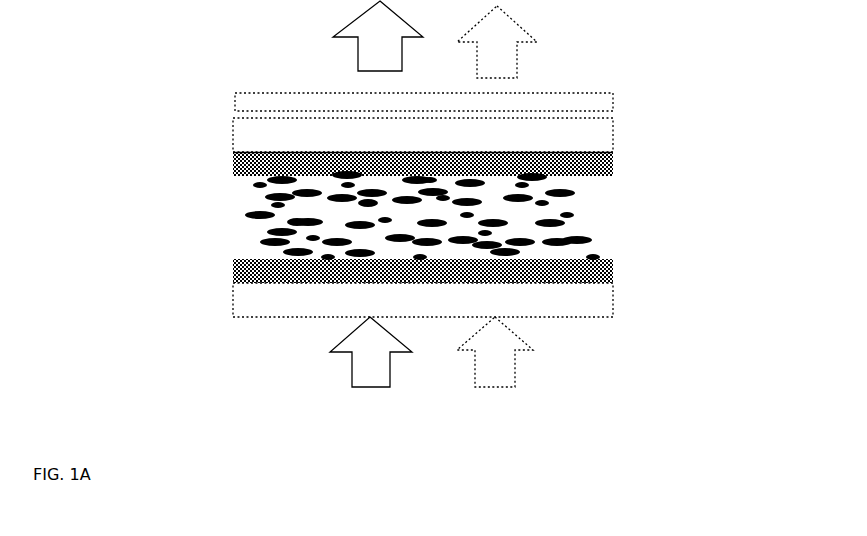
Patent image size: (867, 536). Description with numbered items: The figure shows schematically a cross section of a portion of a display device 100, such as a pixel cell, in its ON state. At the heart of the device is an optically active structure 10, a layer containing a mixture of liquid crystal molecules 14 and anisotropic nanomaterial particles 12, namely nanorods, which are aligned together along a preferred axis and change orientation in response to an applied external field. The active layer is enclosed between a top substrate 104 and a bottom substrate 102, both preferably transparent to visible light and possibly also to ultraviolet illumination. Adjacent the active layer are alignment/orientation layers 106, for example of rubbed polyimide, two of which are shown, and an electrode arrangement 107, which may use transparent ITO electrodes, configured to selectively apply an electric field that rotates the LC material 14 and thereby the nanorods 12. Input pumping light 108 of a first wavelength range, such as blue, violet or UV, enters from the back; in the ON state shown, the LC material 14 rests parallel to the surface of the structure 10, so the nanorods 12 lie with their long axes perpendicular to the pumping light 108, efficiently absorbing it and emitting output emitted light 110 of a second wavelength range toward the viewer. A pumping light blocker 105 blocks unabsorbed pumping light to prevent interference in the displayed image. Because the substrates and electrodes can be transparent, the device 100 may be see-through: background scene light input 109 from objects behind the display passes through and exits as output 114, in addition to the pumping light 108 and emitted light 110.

The display device 100 is at (170, 72).
The optically active structure 10 is at (238, 193).
The anisotropic nanomaterial particles 12 is at (575, 215).
The liquid crystal molecules 14 is at (265, 232).
The bottom substrate 102 is at (612, 147).
The top substrate 104 is at (613, 290).
The pumping light blocker 105 is at (613, 103).
The alignment/orientation layer 106 is at (232, 172).
The electrode arrangement 107 is at (232, 155).
The input pumping light 108 is at (367, 370).
The background scene light input 109 is at (475, 383).
The output emitted light 110 is at (358, 53).
The background scene light output 114 is at (517, 50).